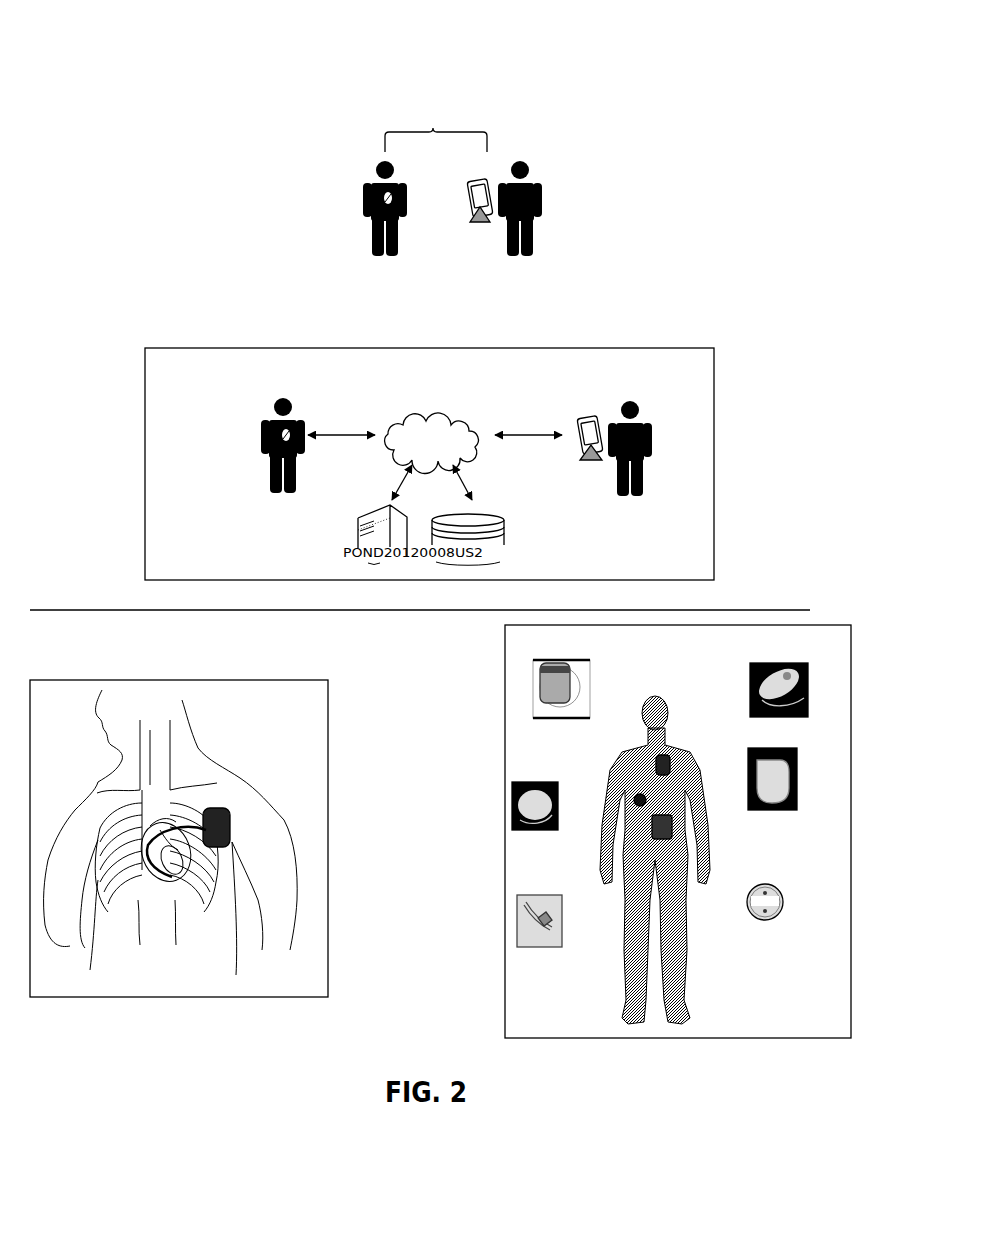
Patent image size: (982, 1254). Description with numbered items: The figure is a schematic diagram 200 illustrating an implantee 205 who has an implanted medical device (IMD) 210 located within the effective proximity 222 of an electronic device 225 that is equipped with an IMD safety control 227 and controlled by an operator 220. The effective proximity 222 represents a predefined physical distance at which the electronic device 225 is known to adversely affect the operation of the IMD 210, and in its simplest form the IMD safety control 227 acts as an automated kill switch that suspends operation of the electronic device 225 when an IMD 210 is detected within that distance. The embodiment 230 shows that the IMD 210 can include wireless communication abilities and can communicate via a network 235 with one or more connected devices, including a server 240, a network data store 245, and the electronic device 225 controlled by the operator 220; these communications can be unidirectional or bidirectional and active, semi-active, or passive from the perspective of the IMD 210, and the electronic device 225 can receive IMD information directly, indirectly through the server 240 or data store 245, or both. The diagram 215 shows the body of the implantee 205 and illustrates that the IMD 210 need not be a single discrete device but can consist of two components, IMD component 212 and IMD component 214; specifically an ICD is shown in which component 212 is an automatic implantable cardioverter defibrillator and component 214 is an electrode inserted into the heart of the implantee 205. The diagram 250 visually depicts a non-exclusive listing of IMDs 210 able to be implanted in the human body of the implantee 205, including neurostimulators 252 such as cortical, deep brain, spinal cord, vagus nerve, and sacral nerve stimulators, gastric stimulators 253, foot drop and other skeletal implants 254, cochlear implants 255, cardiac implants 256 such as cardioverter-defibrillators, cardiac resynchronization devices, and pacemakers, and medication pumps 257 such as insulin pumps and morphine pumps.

The schematic diagram 200 is at (73, 88).
The implantee 205 is at (316, 327).
The implanted medical device (IMD) 210 is at (371, 219).
The IMD component 212 is at (221, 810).
The IMD component 214 is at (173, 875).
The diagram 215 is at (110, 703).
The operator 220 is at (591, 328).
The effective proximity 222 is at (415, 129).
The electronic device 225 is at (473, 182).
The IMD safety control 227 is at (585, 457).
The embodiment 230 is at (320, 373).
The network 235 is at (432, 443).
The server 240 is at (351, 535).
The network data store 245 is at (493, 542).
The diagram 250 is at (723, 659).
The neurostimulators 252 is at (638, 702).
The gastric stimulators 253 is at (613, 800).
The foot drop and other skeletal implants 254 is at (625, 883).
The cochlear implants 255 is at (670, 718).
The cardiac implants 256 is at (682, 765).
The medication pumps 257 is at (682, 837).